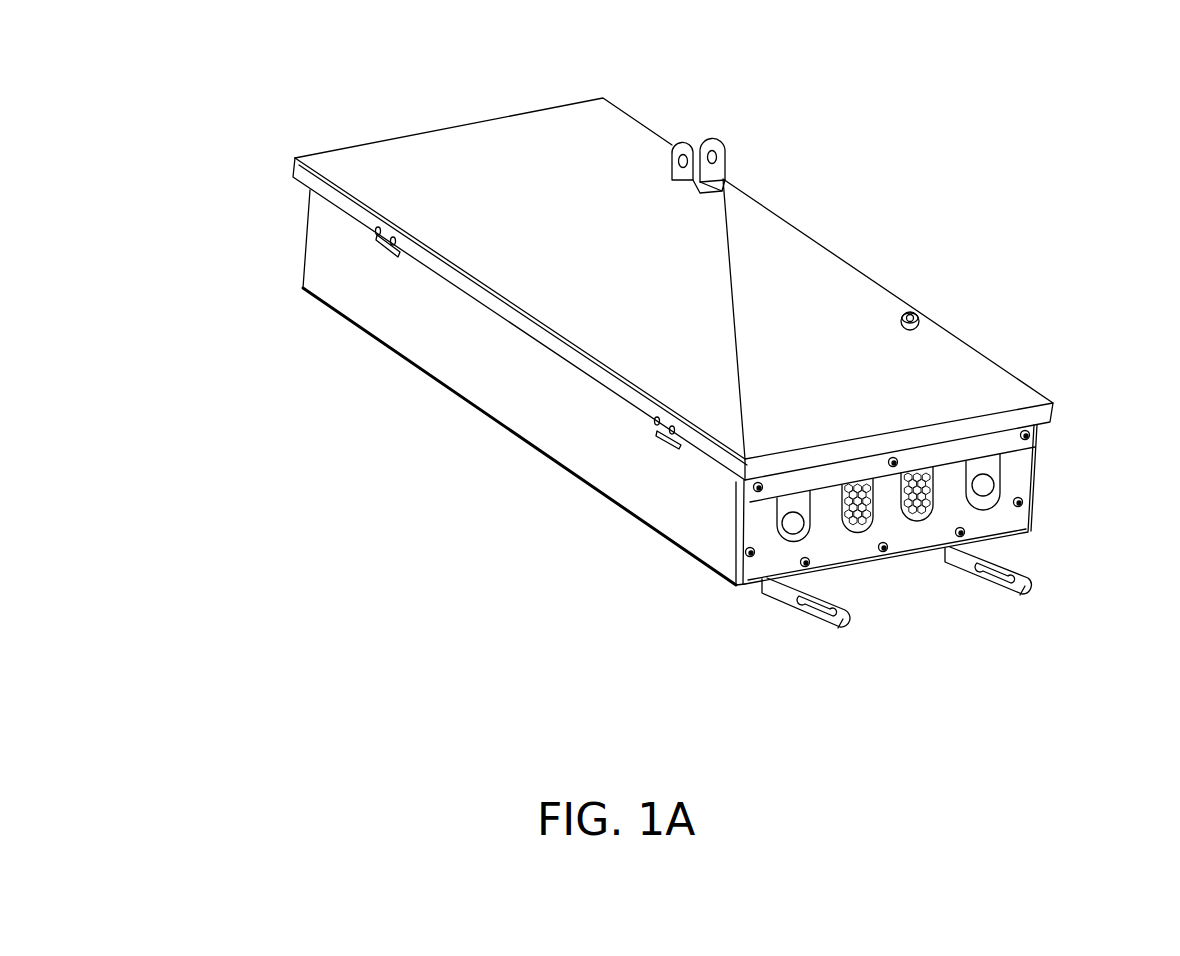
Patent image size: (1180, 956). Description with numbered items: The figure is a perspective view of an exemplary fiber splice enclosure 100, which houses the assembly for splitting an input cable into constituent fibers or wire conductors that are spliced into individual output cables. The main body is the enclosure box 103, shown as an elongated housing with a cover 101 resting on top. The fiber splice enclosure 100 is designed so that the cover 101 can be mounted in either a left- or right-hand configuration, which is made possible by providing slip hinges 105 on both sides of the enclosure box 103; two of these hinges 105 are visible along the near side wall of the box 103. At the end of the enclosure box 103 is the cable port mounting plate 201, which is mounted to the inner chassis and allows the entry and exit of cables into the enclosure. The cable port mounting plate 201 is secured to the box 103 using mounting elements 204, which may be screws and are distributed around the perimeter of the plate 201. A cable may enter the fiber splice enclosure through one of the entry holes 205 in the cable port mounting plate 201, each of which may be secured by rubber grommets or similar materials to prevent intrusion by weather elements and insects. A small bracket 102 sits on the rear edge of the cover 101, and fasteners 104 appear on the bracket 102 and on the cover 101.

The fiber splice enclosure 100 is at (972, 110).
The cover 101 is at (797, 285).
The mounting bracket 102 is at (734, 159).
The enclosure box 103 is at (527, 405).
The fastener 104 is at (703, 147).
The slip hinge 105 is at (386, 256).
The cable port mounting plate 201 is at (1018, 469).
The mounting element 204 is at (1030, 436).
The entry hole 205 is at (792, 526).